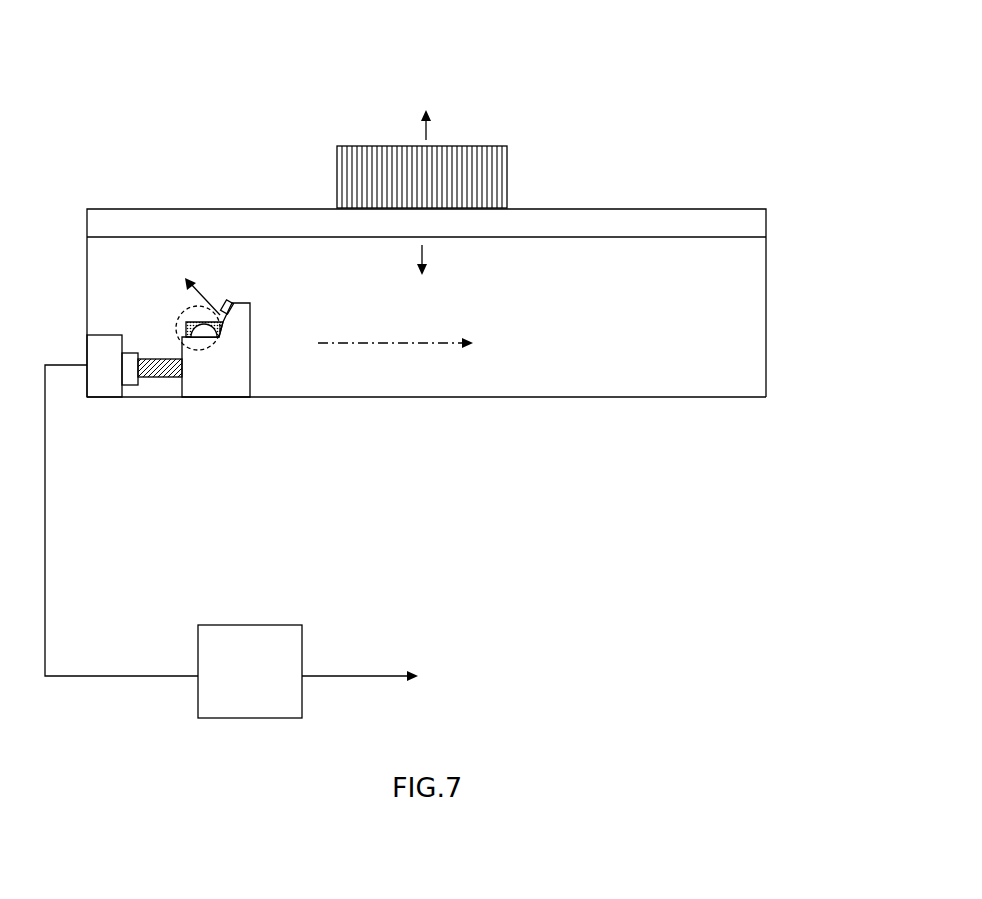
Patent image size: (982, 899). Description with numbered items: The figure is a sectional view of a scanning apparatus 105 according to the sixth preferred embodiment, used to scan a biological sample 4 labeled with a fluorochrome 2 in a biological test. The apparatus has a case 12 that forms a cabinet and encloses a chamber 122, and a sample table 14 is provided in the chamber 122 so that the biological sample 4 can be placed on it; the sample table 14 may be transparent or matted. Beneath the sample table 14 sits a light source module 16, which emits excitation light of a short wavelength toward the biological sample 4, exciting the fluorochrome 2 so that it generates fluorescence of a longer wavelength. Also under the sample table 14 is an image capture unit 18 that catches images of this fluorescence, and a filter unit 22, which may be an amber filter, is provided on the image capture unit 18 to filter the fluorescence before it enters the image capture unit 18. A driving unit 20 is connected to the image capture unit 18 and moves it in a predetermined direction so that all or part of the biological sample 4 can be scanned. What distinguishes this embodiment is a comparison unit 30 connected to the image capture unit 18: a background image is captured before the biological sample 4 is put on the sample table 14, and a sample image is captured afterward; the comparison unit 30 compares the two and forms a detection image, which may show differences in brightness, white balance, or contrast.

The scanning apparatus 105 is at (142, 24).
The fluorochrome 2 is at (346, 178).
The biological sample 4 is at (507, 159).
The case 12 is at (766, 287).
The sample table 14 is at (657, 209).
The chamber 122 is at (746, 366).
The light source module 16 is at (230, 304).
The image capture unit 18 is at (210, 338).
The driving unit 20 is at (165, 380).
The filter unit 22 is at (186, 326).
The comparison unit 30 is at (251, 625).